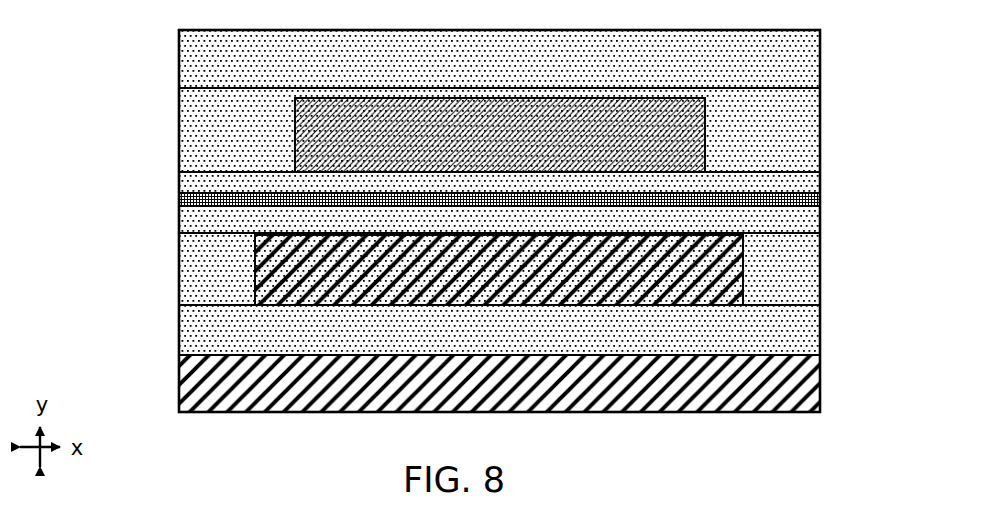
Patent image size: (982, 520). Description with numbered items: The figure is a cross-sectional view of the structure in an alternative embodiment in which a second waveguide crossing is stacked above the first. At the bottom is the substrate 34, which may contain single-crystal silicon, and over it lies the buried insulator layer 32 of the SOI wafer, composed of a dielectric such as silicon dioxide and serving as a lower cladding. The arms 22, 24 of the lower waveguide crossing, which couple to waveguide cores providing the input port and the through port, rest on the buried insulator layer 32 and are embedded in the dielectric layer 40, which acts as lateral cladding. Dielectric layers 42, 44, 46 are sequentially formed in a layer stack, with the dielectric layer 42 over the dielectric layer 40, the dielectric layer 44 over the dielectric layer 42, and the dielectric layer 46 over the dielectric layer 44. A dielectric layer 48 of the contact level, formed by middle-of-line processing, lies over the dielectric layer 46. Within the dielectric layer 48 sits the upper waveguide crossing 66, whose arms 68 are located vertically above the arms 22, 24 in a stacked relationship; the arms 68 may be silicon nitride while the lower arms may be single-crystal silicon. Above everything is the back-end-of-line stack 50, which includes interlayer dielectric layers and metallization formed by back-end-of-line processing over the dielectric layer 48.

The back-end-of-line stack 50 is at (778, 63).
The dielectric layer 48 is at (197, 139).
The waveguide crossing 66 is at (207, 120).
The arms 68 is at (673, 131).
The dielectric layer 46 is at (783, 188).
The dielectric layer 44 is at (197, 199).
The dielectric layer 42 is at (783, 222).
The arm 22 is at (200, 259).
The dielectric layer 40 is at (197, 290).
The arm 24 is at (673, 285).
The buried insulator layer 32 is at (195, 330).
The substrate 34 is at (195, 391).